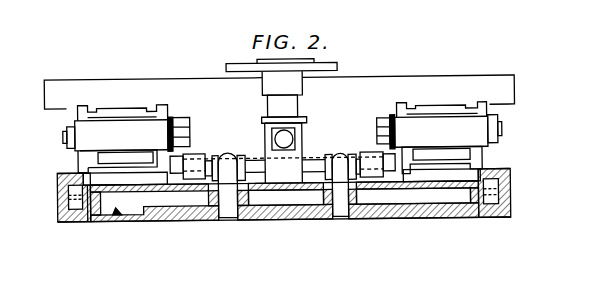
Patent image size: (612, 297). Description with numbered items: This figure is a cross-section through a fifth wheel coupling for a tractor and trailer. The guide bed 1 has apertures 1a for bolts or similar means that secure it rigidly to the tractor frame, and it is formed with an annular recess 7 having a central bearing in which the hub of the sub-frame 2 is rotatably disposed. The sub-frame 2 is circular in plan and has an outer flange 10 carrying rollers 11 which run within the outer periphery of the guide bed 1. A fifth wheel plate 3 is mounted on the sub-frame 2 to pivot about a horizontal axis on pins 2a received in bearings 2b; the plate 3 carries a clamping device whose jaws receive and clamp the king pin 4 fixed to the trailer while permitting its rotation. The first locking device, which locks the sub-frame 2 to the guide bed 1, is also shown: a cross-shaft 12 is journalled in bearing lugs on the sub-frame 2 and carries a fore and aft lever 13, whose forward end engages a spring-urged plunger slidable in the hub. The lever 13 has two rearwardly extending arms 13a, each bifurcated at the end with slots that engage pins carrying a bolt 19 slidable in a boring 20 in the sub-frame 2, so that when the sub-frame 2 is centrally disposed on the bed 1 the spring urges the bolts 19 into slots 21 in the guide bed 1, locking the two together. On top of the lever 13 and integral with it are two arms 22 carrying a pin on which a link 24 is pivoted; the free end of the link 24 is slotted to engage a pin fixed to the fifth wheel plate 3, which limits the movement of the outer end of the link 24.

The guide bed 1 is at (375, 210).
The apertures 1a is at (190, 153).
The sub-frame 2 is at (420, 190).
The pins 2a is at (467, 127).
The bearings 2b is at (473, 155).
The fifth wheel plate 3 is at (480, 88).
The king pin 4 is at (287, 90).
The annular recess 7 is at (115, 212).
The outer flange 10 is at (87, 220).
The rollers 11 is at (490, 220).
The cross-shaft 12 is at (303, 190).
The lever 13 is at (287, 163).
The arms 13a is at (234, 162).
The bolt 19 is at (203, 213).
The boring 20 is at (253, 210).
The slots 21 is at (218, 212).
The arms 22 is at (299, 131).
The link 24 is at (278, 141).